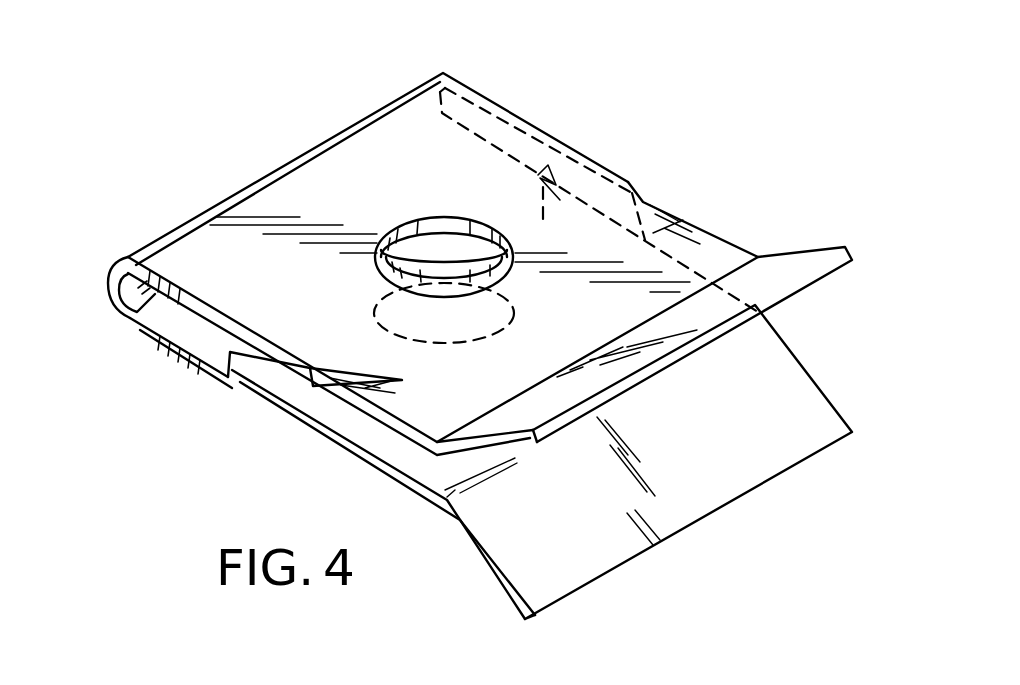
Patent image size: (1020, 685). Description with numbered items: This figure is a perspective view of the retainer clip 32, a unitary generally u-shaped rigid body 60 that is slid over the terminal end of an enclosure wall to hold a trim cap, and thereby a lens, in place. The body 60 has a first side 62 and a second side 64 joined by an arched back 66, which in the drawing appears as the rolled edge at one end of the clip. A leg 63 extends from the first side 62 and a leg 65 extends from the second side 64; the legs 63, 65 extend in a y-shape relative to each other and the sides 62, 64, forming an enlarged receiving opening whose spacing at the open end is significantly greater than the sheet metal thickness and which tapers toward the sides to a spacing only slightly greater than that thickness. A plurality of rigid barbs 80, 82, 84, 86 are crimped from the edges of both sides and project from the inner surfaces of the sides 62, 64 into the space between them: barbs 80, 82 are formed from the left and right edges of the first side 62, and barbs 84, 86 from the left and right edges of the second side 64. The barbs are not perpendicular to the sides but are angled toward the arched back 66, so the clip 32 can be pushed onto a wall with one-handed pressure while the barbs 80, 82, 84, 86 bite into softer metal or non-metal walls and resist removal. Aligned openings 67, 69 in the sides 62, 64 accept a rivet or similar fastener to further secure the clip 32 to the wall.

The retainer clip 32 is at (583, 82).
The u-shaped rigid body 60 is at (318, 184).
The first side 62 is at (187, 302).
The leg 63 is at (485, 447).
The second side 64 is at (172, 345).
The leg 65 is at (492, 568).
The arched back 66 is at (115, 283).
The opening 67 is at (428, 223).
The opening 69 is at (448, 267).
The barb 80 is at (655, 215).
The barb 82 is at (347, 383).
The barb 84 is at (580, 170).
The barb 86 is at (244, 364).